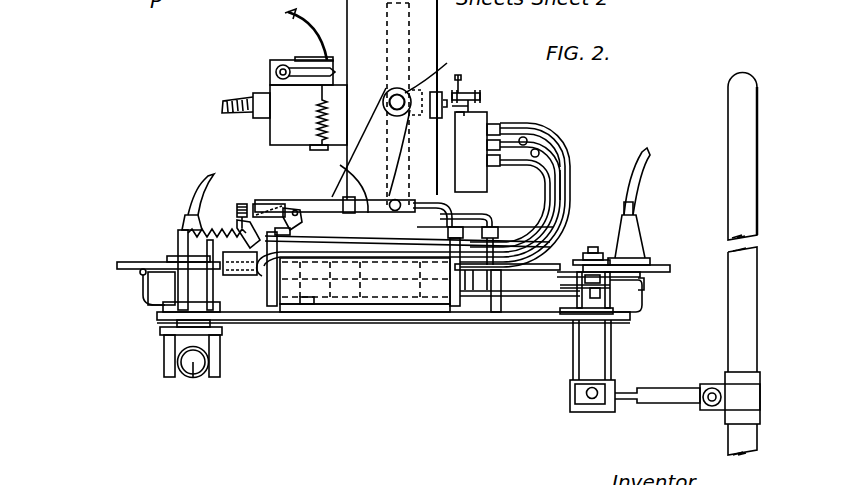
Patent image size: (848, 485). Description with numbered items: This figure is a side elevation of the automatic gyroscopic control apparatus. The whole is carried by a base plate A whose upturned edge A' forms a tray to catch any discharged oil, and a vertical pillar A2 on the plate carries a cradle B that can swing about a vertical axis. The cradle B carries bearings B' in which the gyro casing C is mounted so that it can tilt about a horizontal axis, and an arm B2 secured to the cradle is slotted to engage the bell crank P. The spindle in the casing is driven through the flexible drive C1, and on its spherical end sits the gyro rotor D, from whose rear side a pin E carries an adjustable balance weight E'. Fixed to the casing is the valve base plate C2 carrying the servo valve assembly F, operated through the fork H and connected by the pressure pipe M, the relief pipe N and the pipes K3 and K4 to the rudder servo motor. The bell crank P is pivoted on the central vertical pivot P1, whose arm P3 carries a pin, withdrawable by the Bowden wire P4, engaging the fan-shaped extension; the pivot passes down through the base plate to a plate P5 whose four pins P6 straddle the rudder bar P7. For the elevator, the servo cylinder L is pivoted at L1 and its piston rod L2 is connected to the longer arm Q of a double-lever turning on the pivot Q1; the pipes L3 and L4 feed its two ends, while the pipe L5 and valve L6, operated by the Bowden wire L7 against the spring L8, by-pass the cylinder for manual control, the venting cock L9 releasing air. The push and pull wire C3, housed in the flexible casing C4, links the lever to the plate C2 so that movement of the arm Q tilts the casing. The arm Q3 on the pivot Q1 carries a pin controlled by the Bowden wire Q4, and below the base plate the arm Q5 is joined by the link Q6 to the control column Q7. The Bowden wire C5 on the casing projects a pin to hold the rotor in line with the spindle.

The gyro rotor D is at (386, 14).
The gyro casing C is at (423, 22).
The flexible drive C1 is at (237, 97).
The valve base plate C2 is at (467, 206).
The push and pull wire C3 is at (325, 203).
The flexible casing C4 is at (295, 63).
The Bowden wire C5 is at (306, 22).
The cradle B is at (371, 135).
The bearings B' is at (436, 70).
The arm B2 is at (327, 307).
The pin E is at (481, 99).
The weight E' is at (465, 78).
The fork H is at (462, 95).
The servo operating valve assembly F is at (478, 121).
The pressure pipe M is at (525, 136).
The relief pipe N is at (541, 153).
The pipe K3 is at (538, 136).
The pipe K4 is at (566, 190).
The servo cylinder L is at (297, 313).
The pivot L1 is at (257, 205).
The piston rod L2 is at (521, 317).
The pipe L3 is at (357, 313).
The pipe L4 is at (468, 315).
The pipe L5 is at (342, 183).
The valve L6 is at (295, 210).
The Bowden wire L7 is at (565, 238).
The spring L8 is at (222, 230).
The venting cock L9 is at (239, 204).
The base plate A is at (393, 337).
The upturned edge A' is at (613, 296).
The vertical pillar A2 is at (392, 313).
The bell crank P is at (143, 262).
The central vertical pivot P1 is at (178, 325).
The arm P3 is at (163, 258).
The Bowden wire P4 is at (198, 182).
The plate P5 is at (165, 342).
The pins P6 is at (172, 362).
The rudder bar P7 is at (193, 378).
The longer arm Q is at (610, 267).
The pivot Q1 is at (593, 248).
The arm Q3 is at (652, 263).
The Bowden wire Q4 is at (640, 177).
The arm Q5 is at (570, 397).
The link Q6 is at (673, 400).
The control column Q7 is at (733, 335).